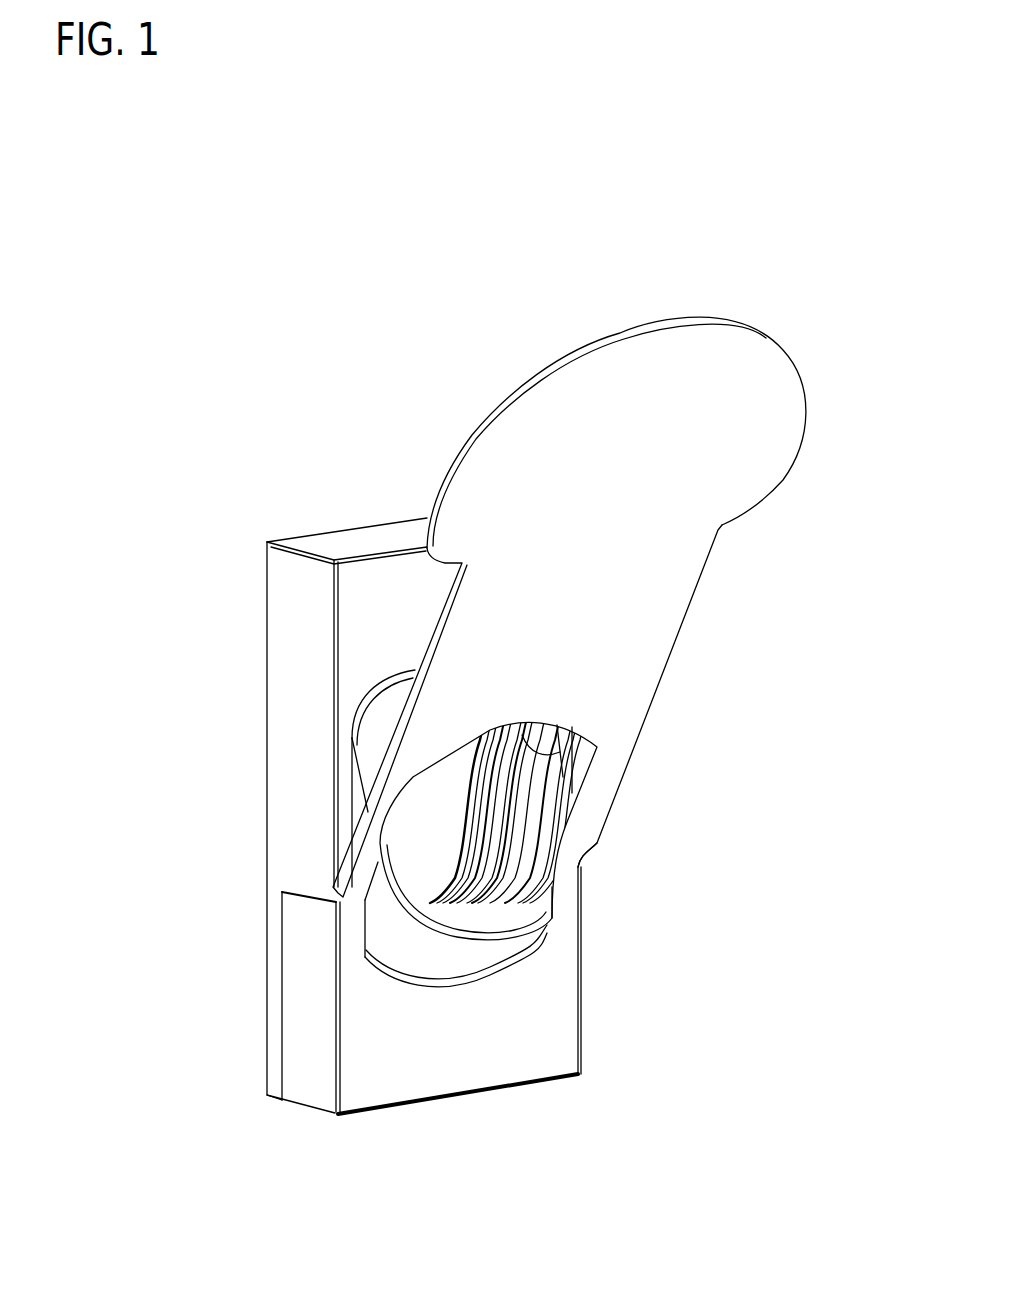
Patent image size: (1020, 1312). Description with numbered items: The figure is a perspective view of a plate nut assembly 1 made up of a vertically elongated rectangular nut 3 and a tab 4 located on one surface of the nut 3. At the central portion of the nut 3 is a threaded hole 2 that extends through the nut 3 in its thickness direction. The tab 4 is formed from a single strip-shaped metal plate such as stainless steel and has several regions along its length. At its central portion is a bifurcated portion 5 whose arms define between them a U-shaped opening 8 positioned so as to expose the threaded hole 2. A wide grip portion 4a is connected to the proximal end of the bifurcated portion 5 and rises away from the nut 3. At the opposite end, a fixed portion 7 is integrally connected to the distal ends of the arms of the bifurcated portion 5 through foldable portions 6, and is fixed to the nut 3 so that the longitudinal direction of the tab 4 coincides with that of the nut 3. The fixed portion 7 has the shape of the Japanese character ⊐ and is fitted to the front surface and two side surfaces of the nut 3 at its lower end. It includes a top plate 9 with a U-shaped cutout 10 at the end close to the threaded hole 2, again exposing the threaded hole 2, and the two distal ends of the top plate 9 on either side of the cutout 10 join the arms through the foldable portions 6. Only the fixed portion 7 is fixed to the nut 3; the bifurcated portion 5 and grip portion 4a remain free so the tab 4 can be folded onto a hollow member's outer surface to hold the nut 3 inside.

The plate nut assembly 1 is at (265, 572).
The threaded hole 2 is at (483, 878).
The nut 3 is at (368, 540).
The tab 4 is at (708, 616).
The grip portion 4a is at (725, 420).
The bifurcated portion 5 is at (380, 832).
The foldable portions 6 is at (574, 865).
The fixed portion 7 is at (527, 1028).
The U-shaped opening 8 is at (527, 757).
The top plate 9 is at (465, 1040).
The U-shaped cutout 10 is at (430, 978).